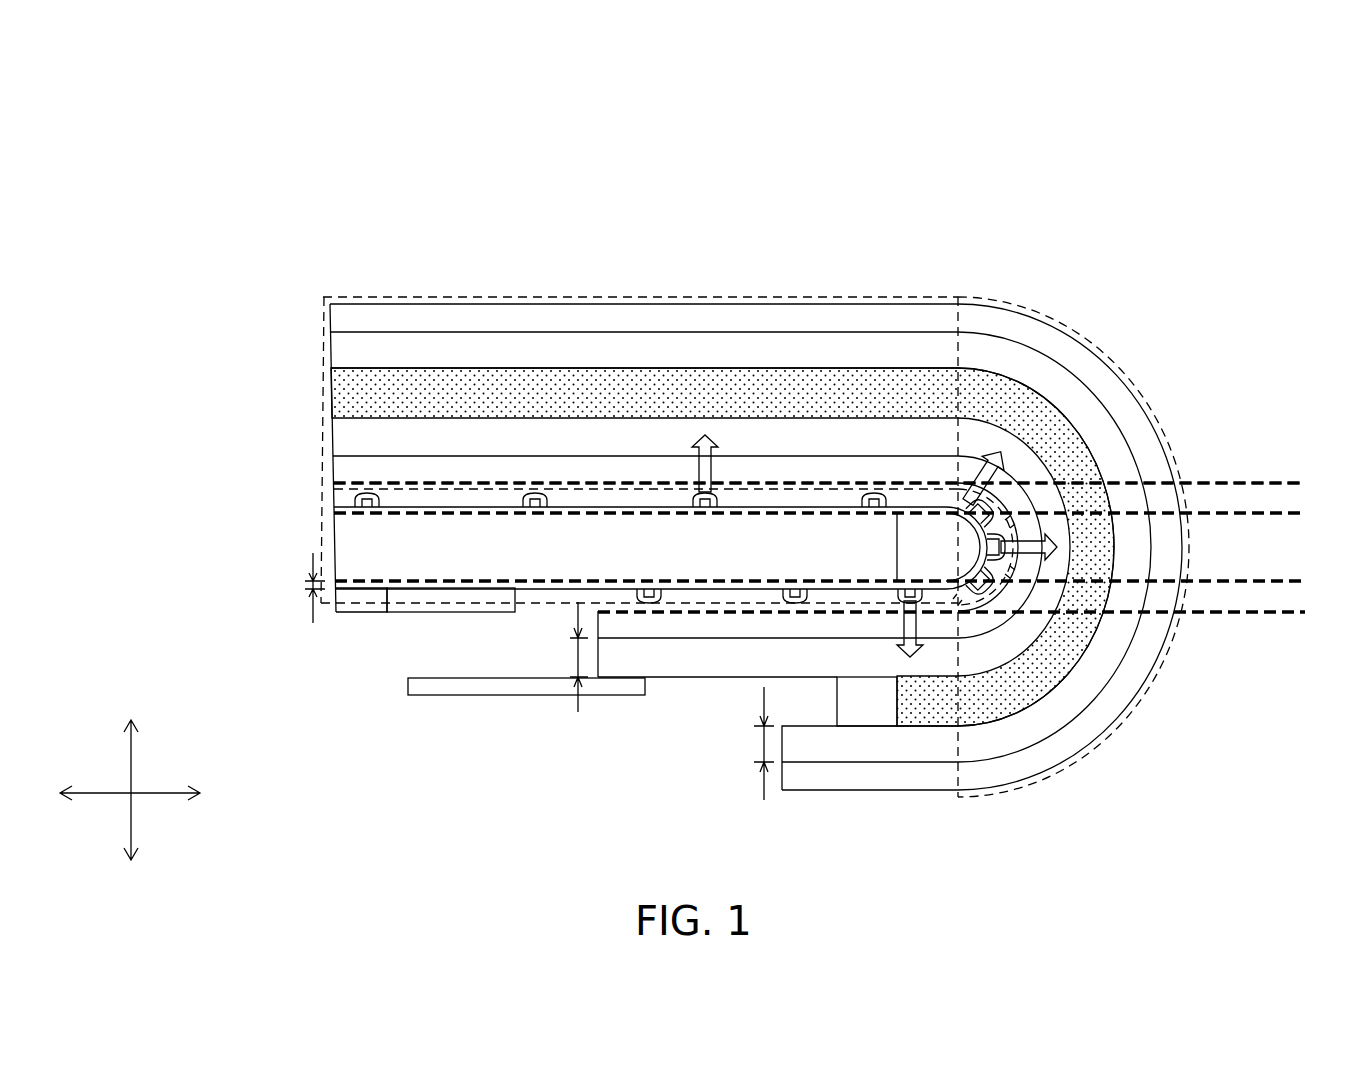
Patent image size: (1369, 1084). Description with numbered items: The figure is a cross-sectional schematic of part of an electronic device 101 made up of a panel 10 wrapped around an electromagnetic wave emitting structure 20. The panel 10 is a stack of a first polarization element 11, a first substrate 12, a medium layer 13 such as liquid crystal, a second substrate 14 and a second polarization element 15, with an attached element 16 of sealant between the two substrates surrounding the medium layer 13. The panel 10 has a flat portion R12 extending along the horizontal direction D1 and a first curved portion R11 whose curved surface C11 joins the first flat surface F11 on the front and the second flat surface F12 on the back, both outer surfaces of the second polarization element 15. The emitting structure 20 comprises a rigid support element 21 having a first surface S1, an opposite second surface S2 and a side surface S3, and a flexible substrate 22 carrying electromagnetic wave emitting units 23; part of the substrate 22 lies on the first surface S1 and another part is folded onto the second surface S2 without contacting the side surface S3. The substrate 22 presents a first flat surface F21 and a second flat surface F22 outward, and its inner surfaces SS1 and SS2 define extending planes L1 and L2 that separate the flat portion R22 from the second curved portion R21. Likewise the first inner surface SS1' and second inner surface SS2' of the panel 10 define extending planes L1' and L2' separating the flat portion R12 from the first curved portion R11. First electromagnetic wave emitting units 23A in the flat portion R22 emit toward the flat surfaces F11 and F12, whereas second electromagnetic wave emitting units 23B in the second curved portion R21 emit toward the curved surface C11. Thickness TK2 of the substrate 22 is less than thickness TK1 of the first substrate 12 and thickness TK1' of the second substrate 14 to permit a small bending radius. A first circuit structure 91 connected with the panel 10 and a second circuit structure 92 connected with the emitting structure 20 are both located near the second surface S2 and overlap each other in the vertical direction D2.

The electronic device 101 is at (1148, 108).
The panel 10 is at (250, 480).
The first polarization element 11 is at (336, 465).
The first substrate 12 is at (336, 435).
The medium layer 13 is at (336, 392).
The second substrate 14 is at (336, 348).
The second polarization element 15 is at (336, 314).
The attached element 16 is at (881, 713).
The electromagnetic wave emitting structure 20 is at (175, 593).
The support element 21 is at (370, 541).
The substrate 22 is at (347, 510).
The electromagnetic wave emitting units 23 is at (722, 472).
The first electromagnetic wave emitting unit 23A is at (345, 497).
The second electromagnetic wave emitting unit 23B is at (970, 505).
The first circuit structure 91 is at (448, 685).
The second circuit structure 92 is at (350, 600).
The first flat surface F11 is at (444, 297).
The second flat surface F12 is at (846, 790).
The first flat surface F21 is at (400, 506).
The second flat surface F22 is at (387, 598).
The first curved portion R11 is at (1093, 753).
The flat portion R12 is at (920, 297).
The second curved portion R21 is at (998, 528).
The flat portion R22 is at (487, 607).
The curved surface C11 is at (1188, 553).
The first surface S1 is at (443, 513).
The second surface S2 is at (500, 581).
The side surface S3 is at (897, 553).
The surface SS1 is at (478, 466).
The first inner surface SS1' is at (652, 367).
The surface SS2 is at (501, 627).
The second inner surface SS2' is at (593, 685).
The thickness of the first substrate TK1 is at (555, 657).
The thickness of the second substrate TK1' is at (736, 743).
The thickness of the substrate TK2 is at (285, 588).
The extending plane L1 is at (840, 511).
The extending plane L1' is at (844, 478).
The extending plane L2 is at (840, 579).
The extending plane L2' is at (975, 610).
The horizontal direction D1 is at (154, 793).
The vertical direction D2 is at (133, 770).